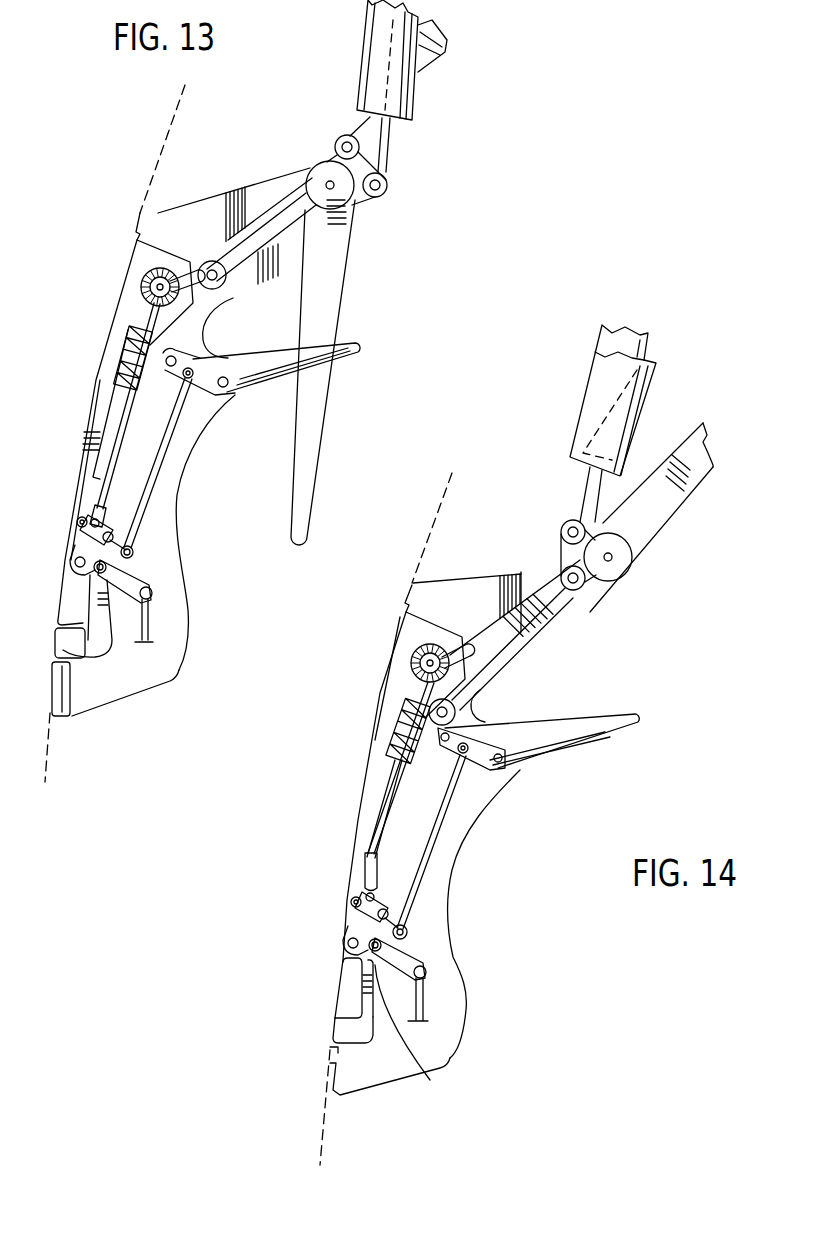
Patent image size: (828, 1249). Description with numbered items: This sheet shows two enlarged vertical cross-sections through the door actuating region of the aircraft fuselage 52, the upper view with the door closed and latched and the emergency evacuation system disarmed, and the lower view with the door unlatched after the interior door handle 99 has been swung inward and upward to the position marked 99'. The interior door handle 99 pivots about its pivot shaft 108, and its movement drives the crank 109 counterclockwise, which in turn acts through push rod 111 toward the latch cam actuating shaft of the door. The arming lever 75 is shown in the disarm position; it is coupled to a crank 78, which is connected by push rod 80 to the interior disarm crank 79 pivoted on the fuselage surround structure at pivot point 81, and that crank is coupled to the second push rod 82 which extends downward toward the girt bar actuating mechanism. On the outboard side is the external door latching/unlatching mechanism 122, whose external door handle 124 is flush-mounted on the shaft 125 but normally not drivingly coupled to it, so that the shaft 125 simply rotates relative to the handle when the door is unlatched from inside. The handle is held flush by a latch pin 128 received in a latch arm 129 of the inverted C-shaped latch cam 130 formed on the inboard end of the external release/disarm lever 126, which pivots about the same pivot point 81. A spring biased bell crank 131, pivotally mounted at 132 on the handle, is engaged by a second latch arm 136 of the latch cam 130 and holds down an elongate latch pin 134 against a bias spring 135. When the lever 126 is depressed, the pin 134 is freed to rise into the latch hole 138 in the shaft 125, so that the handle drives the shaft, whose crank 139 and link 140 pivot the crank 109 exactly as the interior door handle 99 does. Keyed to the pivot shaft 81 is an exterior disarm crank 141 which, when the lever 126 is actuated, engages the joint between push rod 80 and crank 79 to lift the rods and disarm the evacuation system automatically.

In FIG. 13, the fuselage 52 is at (148, 185).
In FIG. 14, the fuselage 52 is at (435, 500).
In FIG. 13, the arming lever 75 is at (355, 352).
In FIG. 14, the arming lever 75 is at (570, 740).
In FIG. 13, the crank 78 is at (210, 353).
In FIG. 14, the crank 78 is at (488, 742).
In FIG. 13, the interior disarm crank 79 is at (105, 570).
In FIG. 14, the interior disarm crank 79 is at (405, 952).
In FIG. 13, the push rod 80 is at (170, 440).
In FIG. 14, the push rod 80 is at (443, 832).
In FIG. 13, the pivot point 81 is at (133, 553).
In FIG. 14, the pivot point 81 is at (407, 933).
In FIG. 13, the second push rod 82 is at (150, 627).
In FIG. 14, the second push rod 82 is at (427, 1017).
In FIG. 13, the interior door handle 99 is at (354, 372).
In FIG. 14, the interior door handle in unlatched position 99' is at (675, 517).
In FIG. 13, the pivot shaft 108 is at (352, 200).
In FIG. 14, the pivot shaft 108 is at (622, 568).
In FIG. 13, the crank 109 is at (368, 173).
In FIG. 14, the crank 109 is at (583, 537).
In FIG. 13, the push rod 111 is at (443, 45).
In FIG. 14, the push rod 111 is at (647, 352).
In FIG. 13, the external door latching/unlatching mechanism 122 is at (86, 396).
In FIG. 14, the external door latching/unlatching mechanism 122 is at (337, 883).
In FIG. 13, the external door handle 124 is at (68, 660).
In FIG. 14, the external door handle 124 is at (347, 990).
In FIG. 13, the shaft 125 is at (140, 287).
In FIG. 14, the shaft 125 is at (440, 647).
In FIG. 13, the external release/disarm lever 126 is at (66, 718).
In FIG. 14, the external release/disarm lever 126 is at (340, 1028).
In FIG. 13, the latch pin 128 is at (77, 522).
In FIG. 14, the latch pin 128 is at (351, 905).
In FIG. 13, the latch arm 129 is at (75, 560).
In FIG. 14, the latch arm 129 is at (347, 943).
In FIG. 13, the inverted C-shaped latch cam 130 is at (105, 665).
In FIG. 14, the inverted C-shaped latch cam 130 is at (363, 958).
In FIG. 13, the spring biased bell crank 131 is at (104, 520).
In FIG. 14, the spring biased bell crank 131 is at (382, 903).
In FIG. 13, the pivot of bell crank 132 is at (88, 515).
In FIG. 14, the pivot of bell crank 132 is at (362, 893).
In FIG. 13, the elongate latch pin 134 is at (112, 430).
In FIG. 14, the elongate latch pin 134 is at (382, 810).
In FIG. 13, the bias spring 135 is at (118, 360).
In FIG. 14, the bias spring 135 is at (395, 733).
In FIG. 13, the second latch arm 136 is at (132, 547).
In FIG. 14, the second latch arm 136 is at (400, 925).
In FIG. 13, the latch hole 138 is at (158, 265).
In FIG. 14, the latch hole 138 is at (413, 652).
In FIG. 13, the crank 139 is at (227, 298).
In FIG. 14, the crank 139 is at (480, 690).
In FIG. 13, the link 140 is at (283, 203).
In FIG. 14, the link 140 is at (540, 647).
In FIG. 13, the exterior disarm crank 141 is at (177, 674).
In FIG. 14, the exterior disarm crank 141 is at (430, 1080).